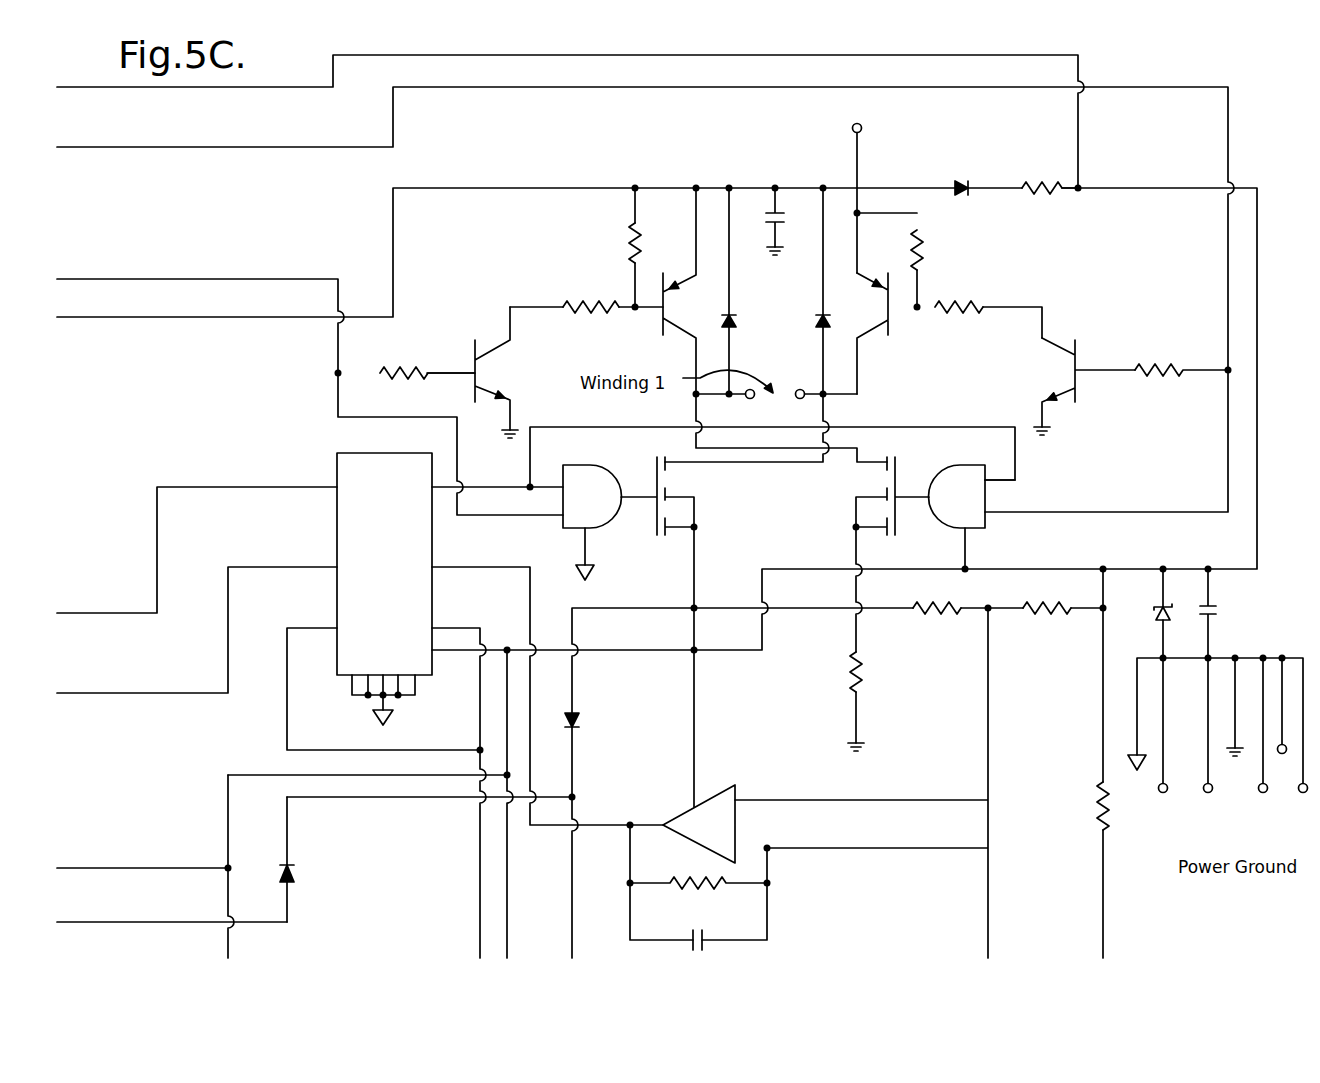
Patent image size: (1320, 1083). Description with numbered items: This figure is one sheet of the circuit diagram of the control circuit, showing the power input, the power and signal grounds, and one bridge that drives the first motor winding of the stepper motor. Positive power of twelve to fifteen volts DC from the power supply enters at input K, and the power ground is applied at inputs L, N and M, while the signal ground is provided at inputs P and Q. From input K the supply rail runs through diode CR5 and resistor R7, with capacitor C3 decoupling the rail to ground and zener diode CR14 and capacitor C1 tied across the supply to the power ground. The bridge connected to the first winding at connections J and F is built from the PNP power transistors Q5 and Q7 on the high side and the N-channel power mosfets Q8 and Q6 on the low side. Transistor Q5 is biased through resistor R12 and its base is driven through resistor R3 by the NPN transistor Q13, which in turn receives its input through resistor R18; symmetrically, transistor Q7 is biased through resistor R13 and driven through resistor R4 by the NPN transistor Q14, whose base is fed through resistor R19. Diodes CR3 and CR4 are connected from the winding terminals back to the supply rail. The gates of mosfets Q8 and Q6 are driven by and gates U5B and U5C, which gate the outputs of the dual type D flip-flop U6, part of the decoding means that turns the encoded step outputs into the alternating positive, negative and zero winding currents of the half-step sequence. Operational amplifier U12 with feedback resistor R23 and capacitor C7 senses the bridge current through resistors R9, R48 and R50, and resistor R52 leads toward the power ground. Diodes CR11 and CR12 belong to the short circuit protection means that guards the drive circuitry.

The resistor R18 is at (395, 369).
The resistor R3 is at (576, 304).
The resistor R12 is at (629, 243).
The resistor R13 is at (931, 255).
The resistor R4 is at (969, 299).
The resistor R7 is at (1046, 178).
The resistor R19 is at (1158, 366).
The resistor R48 is at (940, 620).
The resistor R50 is at (1060, 620).
The resistor R9 is at (867, 677).
The resistor R52 is at (1092, 802).
The resistor R23 is at (698, 878).
The capacitor C7 is at (702, 926).
The capacitor C3 is at (769, 203).
The capacitor C1 is at (1218, 606).
The diode CR3 is at (740, 318).
The diode CR4 is at (818, 320).
The diode CR5 is at (956, 179).
The diode CR11 is at (582, 722).
The diode CR12 is at (307, 876).
The zener diode CR14 is at (1160, 606).
The NPN transistor Q13 is at (481, 374).
The PNP power transistor Q5 is at (664, 310).
The PNP power transistor Q7 is at (888, 308).
The NPN transistor Q14 is at (1066, 369).
The N-channel power mosfet Q8 is at (643, 526).
The N-channel power mosfet Q6 is at (914, 526).
The and gate U5B is at (592, 496).
The and gate U5C is at (957, 496).
The dual type D flip-flop U6 is at (384, 589).
The operational amplifier U12 is at (699, 824).
The positive power input K is at (847, 116).
The winding 1 connection J is at (686, 409).
The winding 1 connection F is at (854, 409).
The signal ground input P is at (1163, 811).
The signal ground input Q is at (1207, 811).
The power ground input L is at (1265, 811).
The power ground input M is at (1304, 811).
The power ground input N is at (1281, 764).